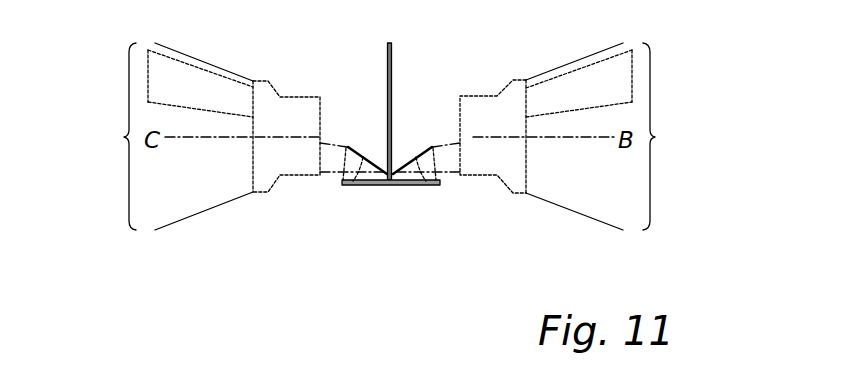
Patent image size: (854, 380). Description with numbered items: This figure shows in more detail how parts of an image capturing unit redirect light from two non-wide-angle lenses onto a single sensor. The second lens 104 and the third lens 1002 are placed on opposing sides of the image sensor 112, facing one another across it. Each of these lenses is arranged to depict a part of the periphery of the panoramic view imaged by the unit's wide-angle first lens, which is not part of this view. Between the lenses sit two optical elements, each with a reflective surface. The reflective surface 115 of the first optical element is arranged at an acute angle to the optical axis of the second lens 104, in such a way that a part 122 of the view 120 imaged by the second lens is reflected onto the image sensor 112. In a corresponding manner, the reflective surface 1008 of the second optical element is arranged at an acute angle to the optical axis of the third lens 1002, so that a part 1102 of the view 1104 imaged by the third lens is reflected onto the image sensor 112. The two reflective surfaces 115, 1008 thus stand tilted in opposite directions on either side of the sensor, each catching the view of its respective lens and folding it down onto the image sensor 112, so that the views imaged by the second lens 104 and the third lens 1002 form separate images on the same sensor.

The view imaged by the third lens 1104 is at (193, 136).
The part of the view imaged by the third lens 1102 is at (148, 75).
The third, non-wide-angle lens 1002 is at (308, 95).
The view imaged by the second lens 120 is at (588, 136).
The part of the view imaged by the second lens 122 is at (632, 75).
The second, non-wide-angle lens 104 is at (517, 77).
The reflective surface of the second optical element 1008 is at (343, 186).
The image sensor 112 is at (375, 187).
The reflective surface of the first optical element 115 is at (438, 187).